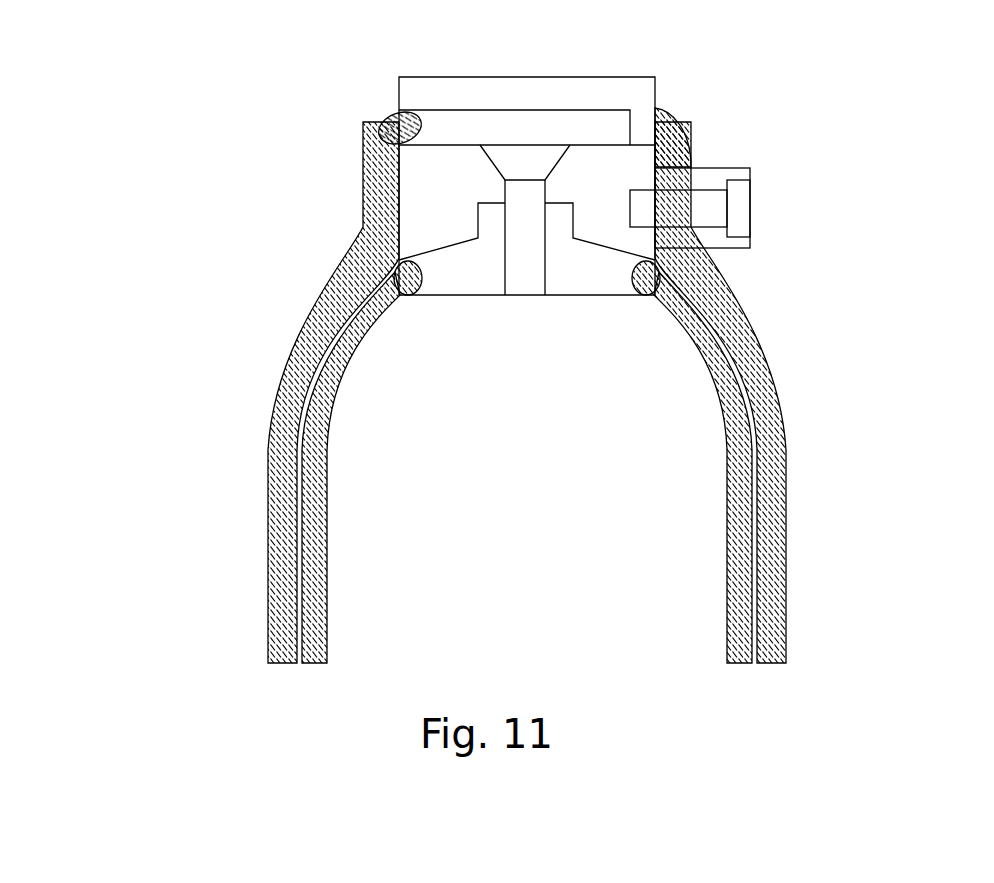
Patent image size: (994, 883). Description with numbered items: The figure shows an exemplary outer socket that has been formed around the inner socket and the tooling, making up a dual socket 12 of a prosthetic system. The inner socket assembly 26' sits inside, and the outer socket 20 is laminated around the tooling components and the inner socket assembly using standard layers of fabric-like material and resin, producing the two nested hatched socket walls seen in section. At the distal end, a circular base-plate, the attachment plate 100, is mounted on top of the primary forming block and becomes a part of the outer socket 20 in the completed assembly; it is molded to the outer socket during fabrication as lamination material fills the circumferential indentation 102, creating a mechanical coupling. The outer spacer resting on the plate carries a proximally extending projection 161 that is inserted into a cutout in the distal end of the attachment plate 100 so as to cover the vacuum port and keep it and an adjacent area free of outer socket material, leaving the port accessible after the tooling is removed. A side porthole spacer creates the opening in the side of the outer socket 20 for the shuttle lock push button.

The dual socket 12 is at (218, 335).
The outer socket 20 is at (760, 307).
The inner socket assembly 26' is at (607, 462).
The attachment plate 100 is at (497, 127).
The circumferential indentation 102 is at (412, 119).
The proximally extending projection 161 is at (643, 127).